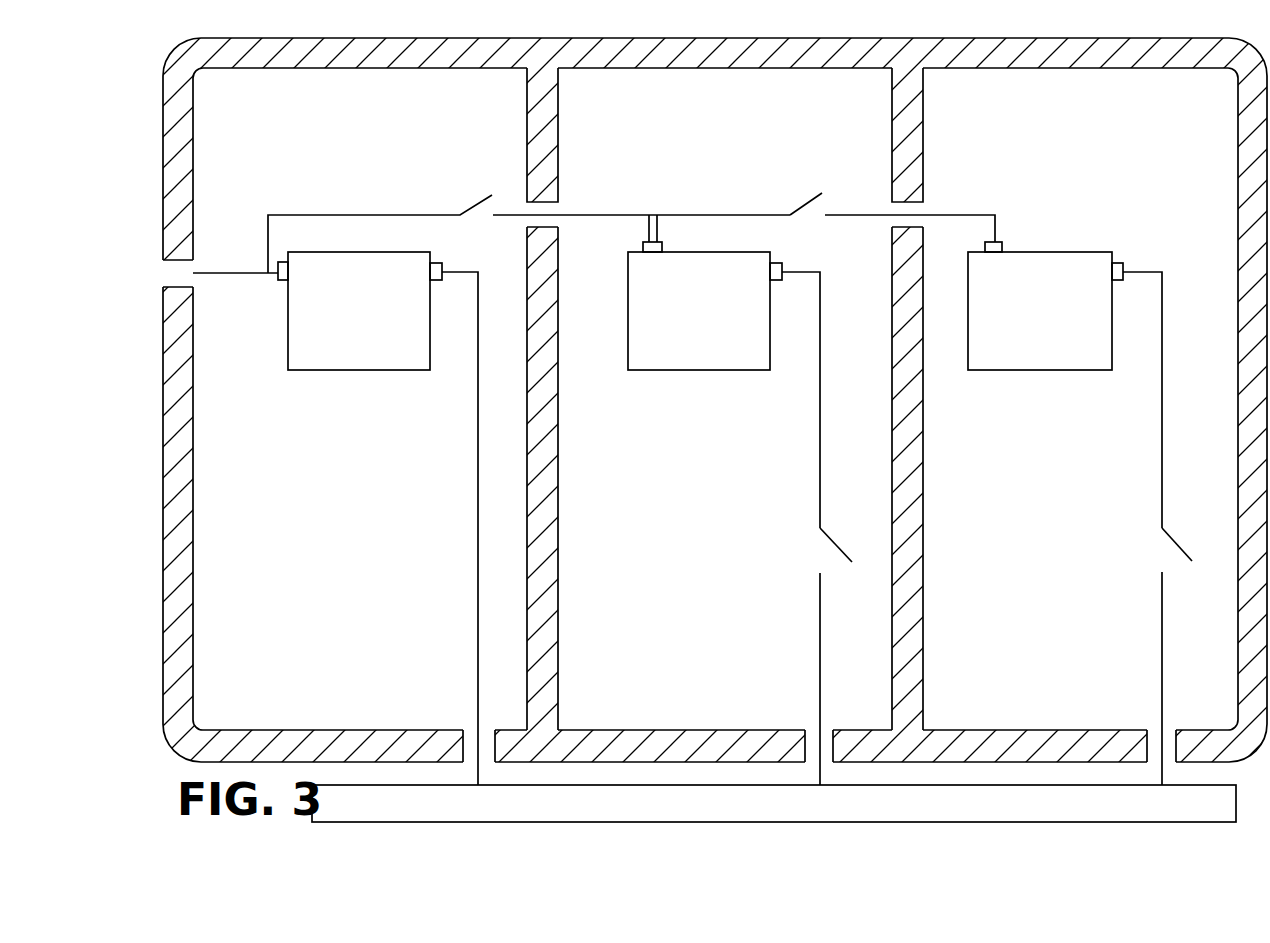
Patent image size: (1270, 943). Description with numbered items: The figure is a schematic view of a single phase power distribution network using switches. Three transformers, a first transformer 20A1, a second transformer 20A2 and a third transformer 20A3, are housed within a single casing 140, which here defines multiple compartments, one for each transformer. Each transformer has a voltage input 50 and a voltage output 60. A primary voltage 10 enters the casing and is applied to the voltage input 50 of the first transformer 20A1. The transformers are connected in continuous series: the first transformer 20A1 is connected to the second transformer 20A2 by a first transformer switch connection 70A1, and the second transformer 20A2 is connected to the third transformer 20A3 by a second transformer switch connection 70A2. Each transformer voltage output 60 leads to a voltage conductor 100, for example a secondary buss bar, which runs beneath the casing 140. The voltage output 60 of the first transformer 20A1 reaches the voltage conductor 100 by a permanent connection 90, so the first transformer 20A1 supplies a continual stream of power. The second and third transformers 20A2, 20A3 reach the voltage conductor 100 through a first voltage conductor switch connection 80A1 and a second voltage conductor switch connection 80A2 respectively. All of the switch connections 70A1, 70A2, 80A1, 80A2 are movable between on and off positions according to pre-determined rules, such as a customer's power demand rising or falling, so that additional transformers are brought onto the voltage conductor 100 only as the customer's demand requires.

The primary voltage 10 is at (220, 272).
The voltage input 50 is at (283, 280).
The voltage output 60 is at (437, 258).
The first transformer 20A1 is at (383, 325).
The second transformer 20A2 is at (720, 323).
The third transformer 20A3 is at (1063, 323).
The first transformer switch connection 70A1 is at (475, 200).
The second transformer switch connection 70A2 is at (808, 200).
The first voltage conductor switch connection 80A1 is at (837, 547).
The second voltage conductor switch connection 80A2 is at (1172, 547).
The permanent connection 90 is at (477, 562).
The voltage conductor 100 is at (745, 812).
The casing 140 is at (1083, 70).